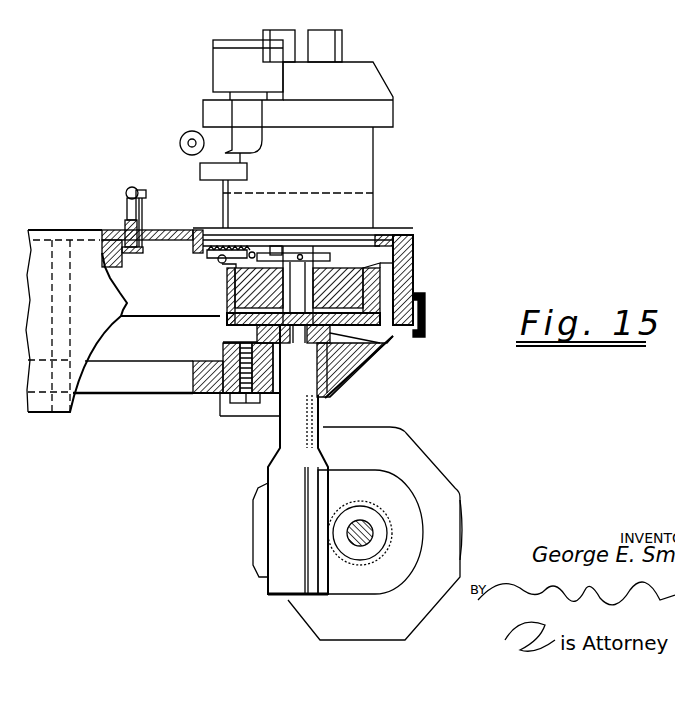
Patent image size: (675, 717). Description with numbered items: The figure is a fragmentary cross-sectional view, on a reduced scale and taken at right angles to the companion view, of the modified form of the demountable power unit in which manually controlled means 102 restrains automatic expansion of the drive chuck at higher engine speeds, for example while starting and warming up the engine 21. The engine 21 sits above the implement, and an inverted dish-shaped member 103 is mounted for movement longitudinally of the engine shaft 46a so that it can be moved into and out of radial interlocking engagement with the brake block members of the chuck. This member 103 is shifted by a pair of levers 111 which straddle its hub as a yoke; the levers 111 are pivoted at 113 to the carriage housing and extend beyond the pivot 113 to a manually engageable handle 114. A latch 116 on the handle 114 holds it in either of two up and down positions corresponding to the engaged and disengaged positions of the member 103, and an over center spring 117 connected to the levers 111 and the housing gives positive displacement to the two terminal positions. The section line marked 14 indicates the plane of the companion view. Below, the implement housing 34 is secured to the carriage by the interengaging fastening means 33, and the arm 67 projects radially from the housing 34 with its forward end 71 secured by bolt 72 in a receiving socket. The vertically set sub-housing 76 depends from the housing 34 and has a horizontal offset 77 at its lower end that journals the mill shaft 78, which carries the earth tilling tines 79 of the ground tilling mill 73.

The engine 21 is at (377, 150).
The section line 14 is at (230, 173).
The manually engageable handle 114 is at (122, 210).
The latch 116 is at (145, 213).
The levers 111 is at (266, 258).
The engine shaft 46a is at (305, 258).
The inverted dish-shaped member 103 is at (350, 272).
The manually controlled means 102 is at (413, 262).
The interengaging fastening means 33 is at (430, 313).
The implement housing 34 is at (385, 362).
The over center spring 117 is at (210, 257).
The pivot 113 is at (220, 262).
The arm 67 is at (127, 392).
The forward end of arm 71 is at (218, 395).
The bolt 72 is at (245, 404).
The sub-housing 76 is at (273, 474).
The ground tilling mill 73 is at (470, 488).
The mill shaft 78 is at (372, 520).
The earth tilling tines 79 is at (463, 547).
The horizontal offset 77 is at (377, 573).